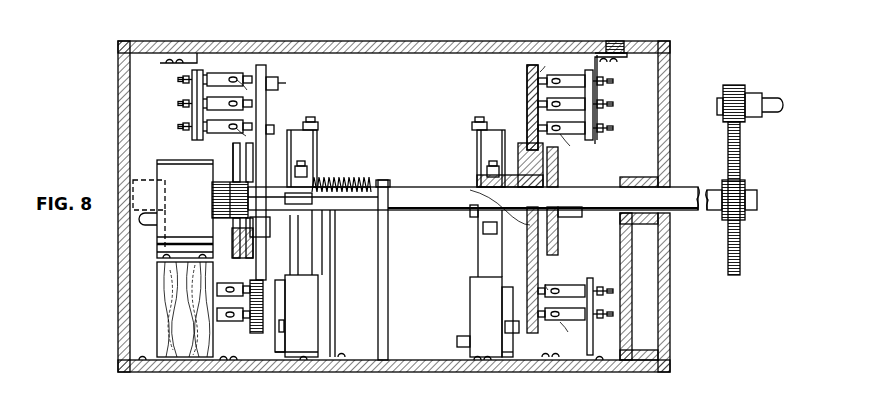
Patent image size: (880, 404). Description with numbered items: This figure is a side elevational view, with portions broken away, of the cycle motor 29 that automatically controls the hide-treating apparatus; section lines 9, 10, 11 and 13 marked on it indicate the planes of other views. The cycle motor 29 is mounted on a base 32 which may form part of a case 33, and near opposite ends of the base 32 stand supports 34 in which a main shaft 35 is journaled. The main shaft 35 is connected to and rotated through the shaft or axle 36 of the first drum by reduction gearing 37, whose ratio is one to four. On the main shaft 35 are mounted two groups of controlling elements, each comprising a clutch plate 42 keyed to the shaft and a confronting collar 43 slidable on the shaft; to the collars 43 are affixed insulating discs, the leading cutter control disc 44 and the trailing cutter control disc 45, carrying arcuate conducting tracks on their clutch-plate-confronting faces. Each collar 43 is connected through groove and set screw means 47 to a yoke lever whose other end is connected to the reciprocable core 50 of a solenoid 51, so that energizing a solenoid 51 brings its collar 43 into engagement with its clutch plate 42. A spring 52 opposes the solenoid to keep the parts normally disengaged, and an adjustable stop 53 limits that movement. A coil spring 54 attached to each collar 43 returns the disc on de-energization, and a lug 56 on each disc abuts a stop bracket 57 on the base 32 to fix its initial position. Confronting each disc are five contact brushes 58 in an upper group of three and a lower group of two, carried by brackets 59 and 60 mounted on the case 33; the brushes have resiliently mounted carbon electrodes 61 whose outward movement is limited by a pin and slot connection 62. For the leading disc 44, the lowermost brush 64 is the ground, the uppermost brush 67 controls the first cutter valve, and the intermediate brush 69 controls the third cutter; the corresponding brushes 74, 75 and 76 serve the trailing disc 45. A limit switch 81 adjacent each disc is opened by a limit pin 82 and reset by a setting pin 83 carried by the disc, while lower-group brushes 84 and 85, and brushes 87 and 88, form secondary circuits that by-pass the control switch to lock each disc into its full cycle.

The cycle motor 29 is at (273, 40).
The section line 9- 9 is at (396, 82).
The section line 10- 10 is at (660, 41).
The section line 11- 11 is at (114, 46).
The section line 13- 13 is at (526, 80).
The base 32 is at (246, 372).
The case 33 is at (328, 398).
The supports 34 is at (150, 282).
The main shaft 35 is at (688, 187).
The shaft or axle of the first drum 36 is at (773, 96).
The reduction gearing 37 is at (742, 134).
The clutch plate 42 is at (233, 147).
The collar 43 is at (243, 258).
The leading cutter control disc 44 is at (266, 109).
The trailing cutter control disc 45 is at (527, 110).
The groove and set screw means 47 is at (300, 163).
The reciprocable core 50 is at (215, 190).
The solenoid 51 is at (175, 160).
The spring 52 is at (325, 180).
The stop 53 is at (311, 210).
The coil spring 54 is at (317, 161).
The lug 56 is at (280, 317).
The stop bracket 57 is at (278, 346).
The contact brushes 58 is at (232, 73).
The bracket 59 is at (597, 140).
The bracket 60 is at (593, 280).
The electrodes 61 is at (560, 281).
The pin and slot connection 62 is at (408, 228).
The lowermost brush 64 is at (215, 126).
The uppermost brush 67 is at (215, 79).
The intermediate brush 69 is at (215, 103).
The brush 74 is at (575, 128).
The brush 75 is at (575, 81).
The brush 76 is at (575, 104).
The limit switch 81 is at (470, 302).
The limit pin 82 is at (277, 83).
The setting pin 83 is at (284, 328).
The brush 84 is at (575, 291).
The brush 85 is at (575, 314).
The brush 87 is at (240, 283).
The brush 88 is at (242, 320).